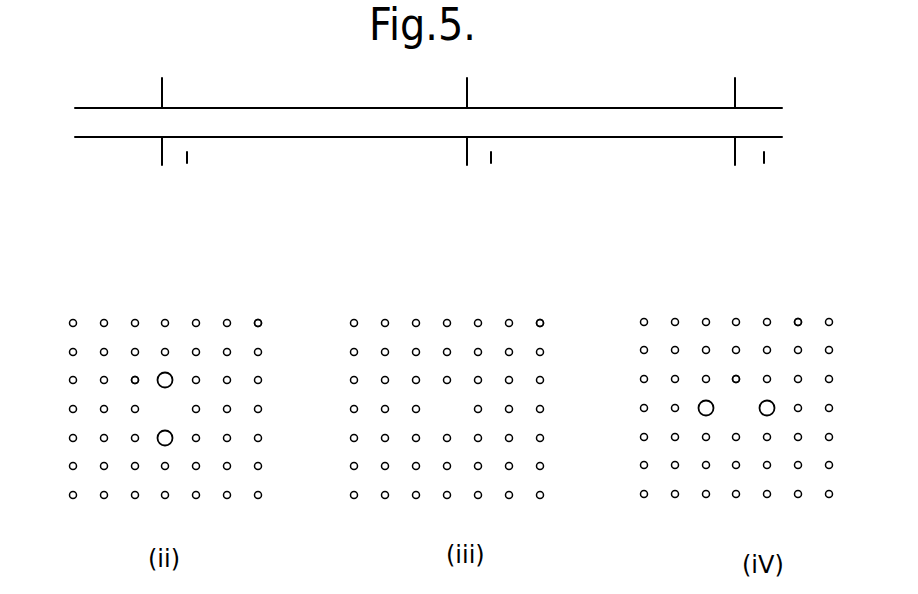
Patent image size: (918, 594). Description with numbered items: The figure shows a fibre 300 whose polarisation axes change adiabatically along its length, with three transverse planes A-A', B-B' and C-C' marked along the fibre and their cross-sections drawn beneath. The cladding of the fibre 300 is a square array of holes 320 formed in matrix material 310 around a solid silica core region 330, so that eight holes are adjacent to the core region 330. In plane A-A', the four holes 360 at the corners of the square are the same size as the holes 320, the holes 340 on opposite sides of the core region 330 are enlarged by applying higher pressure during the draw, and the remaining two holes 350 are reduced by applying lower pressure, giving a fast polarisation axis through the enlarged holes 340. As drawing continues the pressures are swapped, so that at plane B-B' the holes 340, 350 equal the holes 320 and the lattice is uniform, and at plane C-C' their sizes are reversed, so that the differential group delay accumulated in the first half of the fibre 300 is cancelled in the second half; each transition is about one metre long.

The fibre 300 is at (107, 92).
The matrix material 310 is at (245, 397).
The holes 320 is at (259, 320).
The core region 330 is at (165, 410).
The enlarged holes 340 is at (163, 374).
The reduced holes 350 is at (200, 411).
The corner holes 360 is at (133, 378).